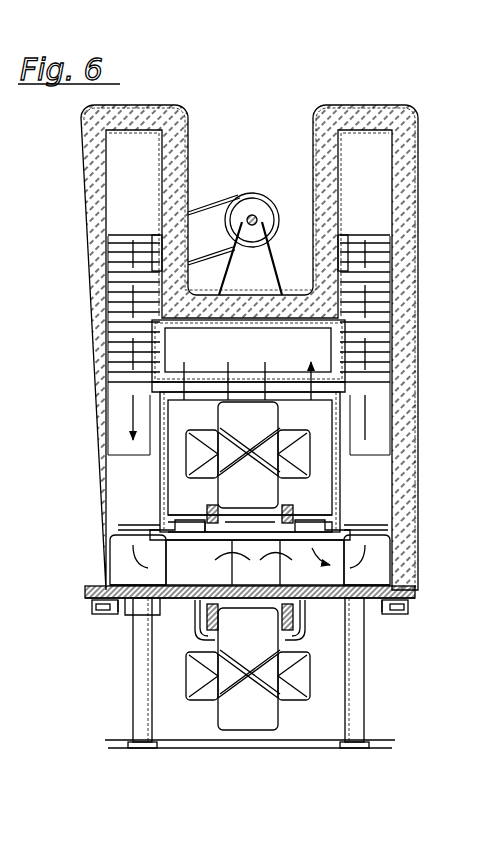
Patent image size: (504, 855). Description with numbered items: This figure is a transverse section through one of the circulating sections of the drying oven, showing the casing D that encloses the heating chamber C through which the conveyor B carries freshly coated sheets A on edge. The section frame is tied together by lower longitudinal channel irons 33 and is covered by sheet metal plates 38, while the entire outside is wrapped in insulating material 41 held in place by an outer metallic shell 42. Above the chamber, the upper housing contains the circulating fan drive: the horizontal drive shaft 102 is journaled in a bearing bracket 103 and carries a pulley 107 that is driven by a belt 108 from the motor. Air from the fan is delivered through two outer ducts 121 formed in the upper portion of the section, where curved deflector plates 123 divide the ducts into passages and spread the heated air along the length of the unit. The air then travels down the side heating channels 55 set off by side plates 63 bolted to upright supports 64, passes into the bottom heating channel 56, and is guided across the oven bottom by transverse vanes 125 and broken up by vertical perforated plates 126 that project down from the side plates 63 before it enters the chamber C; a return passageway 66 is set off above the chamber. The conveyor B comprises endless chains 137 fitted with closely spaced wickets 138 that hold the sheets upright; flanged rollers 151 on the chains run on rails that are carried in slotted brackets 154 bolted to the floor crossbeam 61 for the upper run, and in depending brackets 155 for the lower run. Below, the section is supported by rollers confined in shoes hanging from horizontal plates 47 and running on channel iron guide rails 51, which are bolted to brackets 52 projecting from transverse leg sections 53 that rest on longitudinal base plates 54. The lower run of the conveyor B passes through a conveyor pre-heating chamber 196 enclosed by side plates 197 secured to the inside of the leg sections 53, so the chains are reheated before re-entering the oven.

The outer duct 121 is at (128, 181).
The curved deflector plate 123 is at (125, 236).
The insulating material 41 is at (148, 248).
The outer metallic shell 42 is at (82, 272).
The casing D is at (82, 297).
The pulley 107 is at (246, 212).
The drive shaft 102 is at (254, 218).
The belt 108 is at (204, 207).
The bearing bracket 103 is at (256, 268).
The return passageway 66 is at (248, 360).
The sheet metal plate 38 is at (140, 346).
The chamber C is at (165, 415).
The side plate 63 is at (168, 420).
The sheet A is at (315, 426).
The conveyor B is at (186, 440).
The wicket 138 is at (280, 414).
The upright support 64 is at (163, 455).
The heating channel 55 is at (122, 480).
The slotted bracket 154 is at (205, 525).
The flanged roller 151 is at (209, 508).
The endless chain 137 is at (300, 516).
The depending bracket 155 is at (206, 620).
The transverse vane 125 is at (118, 570).
The crossbeam 61 is at (290, 545).
The vertical perforated plate 126 is at (160, 566).
The lower longitudinal channel iron 33 is at (88, 598).
The horizontal plate 47 is at (95, 612).
The guide rail 51 is at (100, 618).
The bracket 52 is at (118, 620).
The bottom heating channel 56 is at (130, 620).
The leg section 53 is at (140, 672).
The conveyor pre-heating chamber 196 is at (165, 695).
The side plate 197 is at (154, 718).
The base plate 54 is at (140, 750).